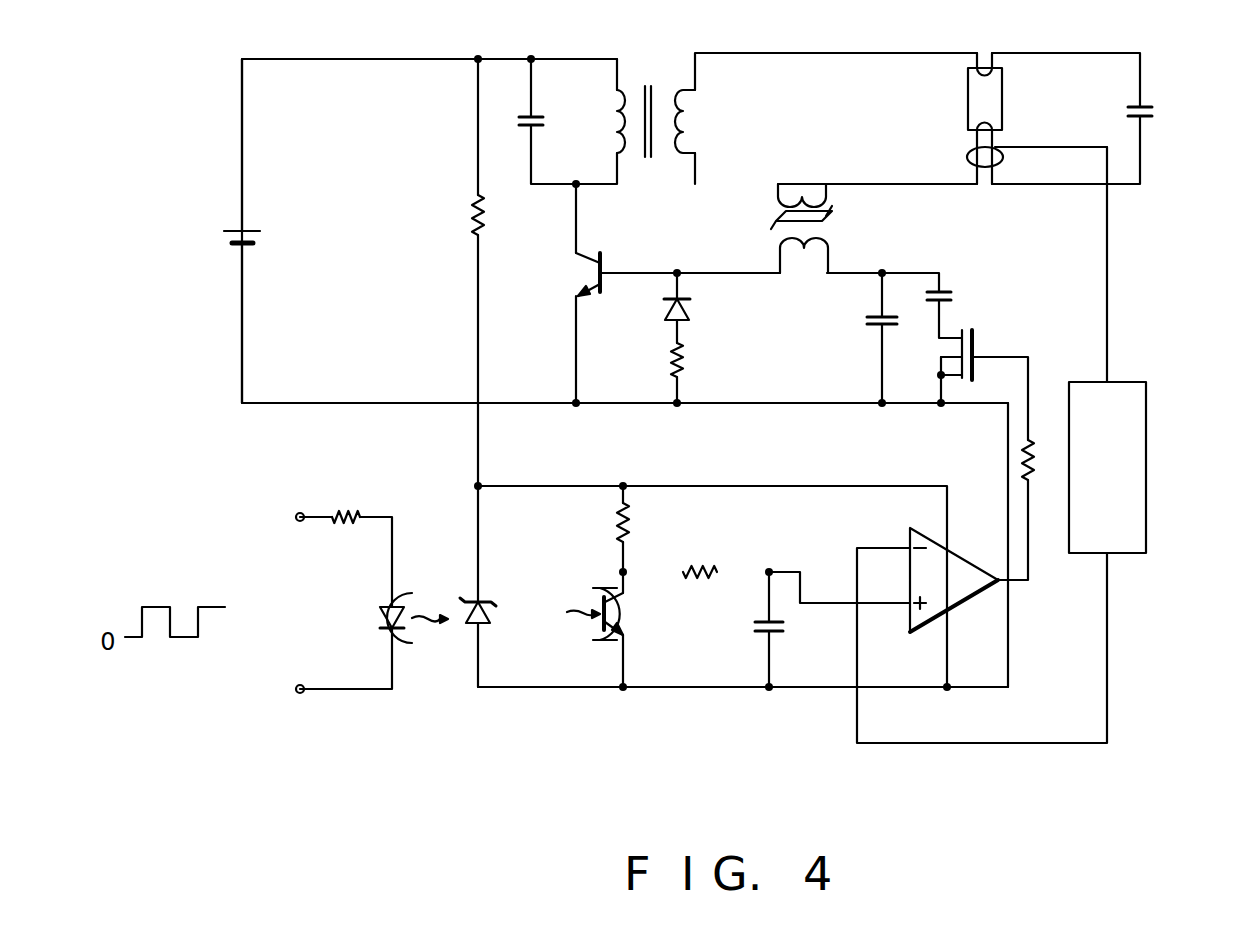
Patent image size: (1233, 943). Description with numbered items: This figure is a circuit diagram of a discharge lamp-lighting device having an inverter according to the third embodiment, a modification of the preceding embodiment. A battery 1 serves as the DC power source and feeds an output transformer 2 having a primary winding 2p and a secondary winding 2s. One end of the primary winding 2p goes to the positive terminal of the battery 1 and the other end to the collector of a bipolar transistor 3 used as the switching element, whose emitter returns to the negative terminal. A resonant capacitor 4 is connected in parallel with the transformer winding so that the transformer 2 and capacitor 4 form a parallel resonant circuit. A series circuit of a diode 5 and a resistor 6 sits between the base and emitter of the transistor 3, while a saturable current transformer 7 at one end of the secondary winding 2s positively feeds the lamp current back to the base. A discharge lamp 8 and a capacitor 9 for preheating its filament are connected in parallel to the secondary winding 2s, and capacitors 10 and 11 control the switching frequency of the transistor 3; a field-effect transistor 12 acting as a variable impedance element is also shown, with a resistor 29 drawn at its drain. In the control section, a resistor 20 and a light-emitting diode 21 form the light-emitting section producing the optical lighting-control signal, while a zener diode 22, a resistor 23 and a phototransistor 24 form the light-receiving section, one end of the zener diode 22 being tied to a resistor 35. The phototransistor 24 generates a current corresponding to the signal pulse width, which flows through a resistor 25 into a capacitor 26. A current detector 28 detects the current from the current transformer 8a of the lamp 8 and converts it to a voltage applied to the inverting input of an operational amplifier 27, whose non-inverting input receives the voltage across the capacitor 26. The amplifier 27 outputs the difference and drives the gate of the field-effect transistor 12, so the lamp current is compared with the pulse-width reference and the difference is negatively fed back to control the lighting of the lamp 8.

The battery 1 is at (232, 245).
The output transformer 2 is at (647, 90).
The primary winding 2p is at (612, 128).
The secondary winding 2s is at (690, 127).
The bipolar transistor 3 is at (585, 274).
The resonant capacitor 4 is at (545, 119).
The diode 5 is at (695, 317).
The resistor 6 is at (695, 366).
The saturable current transformer 7 is at (823, 228).
The discharge lamp 8 is at (985, 48).
The current transformer 8a is at (997, 150).
The capacitor 9 is at (1152, 117).
The capacitor 10 is at (867, 321).
The capacitor 11 is at (960, 299).
The field effect transistor 12 is at (966, 385).
The resistor 20 is at (351, 510).
The light-emitting diode 21 is at (397, 592).
The zener diode 22 is at (489, 601).
The resistor 23 is at (637, 528).
The phototransistor 24 is at (633, 621).
The resistor 25 is at (703, 562).
The capacitor 26 is at (758, 634).
The operational amplifier 27 is at (962, 556).
The current detector 28 is at (1146, 447).
The resistor 29 is at (1022, 460).
The resistor 35 is at (472, 218).